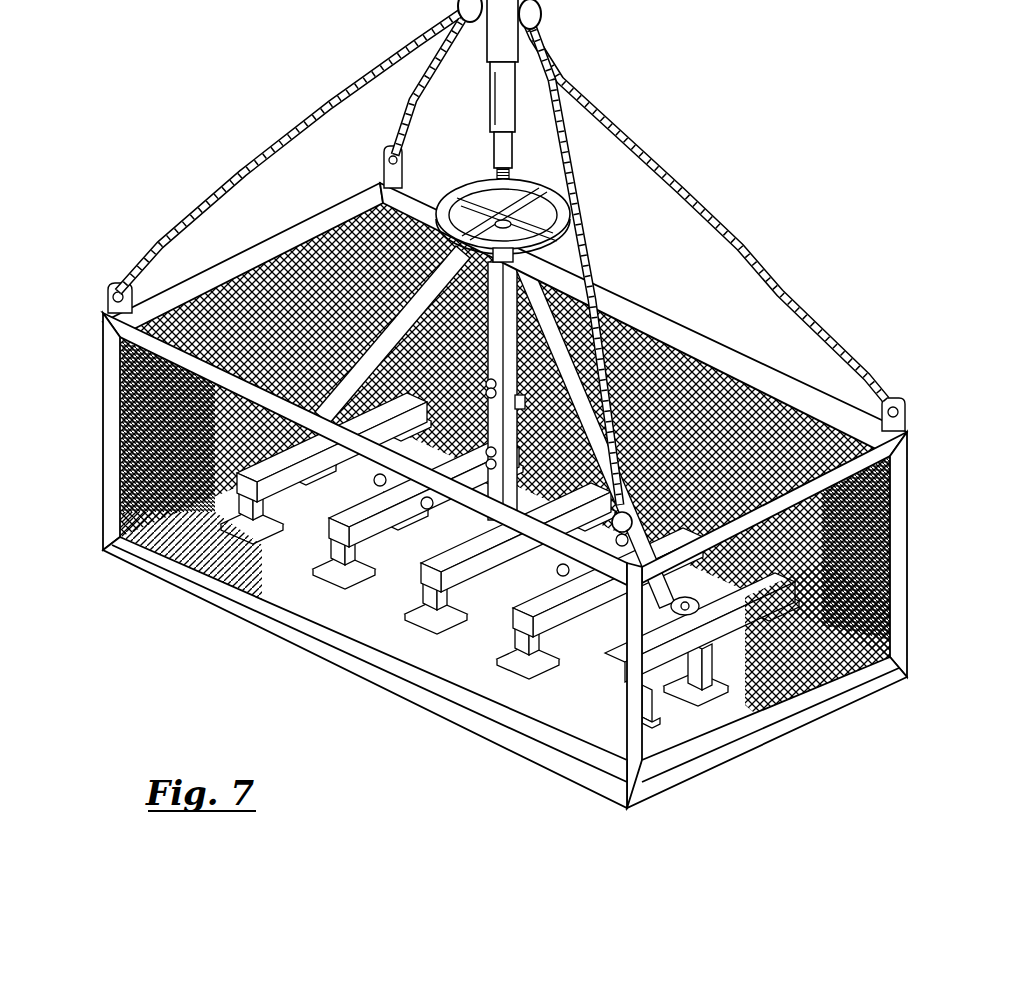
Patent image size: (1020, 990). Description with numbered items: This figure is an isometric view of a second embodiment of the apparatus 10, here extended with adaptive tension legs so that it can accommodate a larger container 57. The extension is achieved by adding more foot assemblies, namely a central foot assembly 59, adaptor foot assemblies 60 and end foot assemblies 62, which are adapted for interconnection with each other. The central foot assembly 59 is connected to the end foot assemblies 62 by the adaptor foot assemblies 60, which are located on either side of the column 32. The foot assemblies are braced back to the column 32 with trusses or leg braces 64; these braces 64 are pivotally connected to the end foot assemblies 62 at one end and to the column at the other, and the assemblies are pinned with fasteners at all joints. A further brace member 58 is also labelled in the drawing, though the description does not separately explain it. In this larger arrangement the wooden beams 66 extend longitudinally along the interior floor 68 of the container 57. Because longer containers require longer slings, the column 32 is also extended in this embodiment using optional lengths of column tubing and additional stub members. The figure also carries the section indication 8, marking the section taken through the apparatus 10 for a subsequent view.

The apparatus 10 is at (670, 88).
The column 32 is at (512, 302).
The container 57 is at (762, 372).
The brace 58 is at (402, 232).
The central foot assembly 59 is at (442, 600).
The adaptor foot assembly 60 is at (348, 552).
The end foot assembly 62 is at (262, 500).
The leg brace 64 is at (570, 343).
The wooden beam 66 is at (558, 668).
The interior floor 68 is at (652, 735).
The section line 8- 8 is at (103, 458).